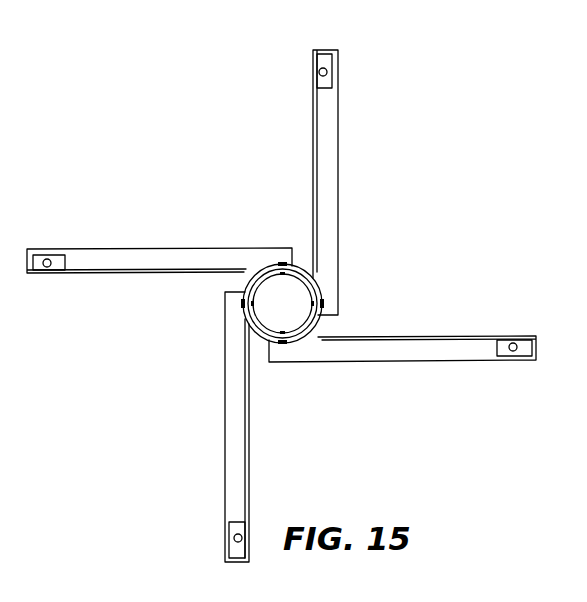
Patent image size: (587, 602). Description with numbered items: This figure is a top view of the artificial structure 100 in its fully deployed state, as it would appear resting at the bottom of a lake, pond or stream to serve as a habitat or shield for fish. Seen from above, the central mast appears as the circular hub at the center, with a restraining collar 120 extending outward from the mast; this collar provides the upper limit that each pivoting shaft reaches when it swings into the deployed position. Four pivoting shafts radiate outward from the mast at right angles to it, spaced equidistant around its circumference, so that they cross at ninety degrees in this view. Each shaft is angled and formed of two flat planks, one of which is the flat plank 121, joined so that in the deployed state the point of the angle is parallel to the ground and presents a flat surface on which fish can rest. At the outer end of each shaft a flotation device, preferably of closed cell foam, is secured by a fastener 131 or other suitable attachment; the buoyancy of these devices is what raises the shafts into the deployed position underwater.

The structure 100 is at (298, 290).
The restraining collar 120 is at (313, 323).
The flat plank 121 is at (419, 384).
The fastener 131 is at (513, 351).